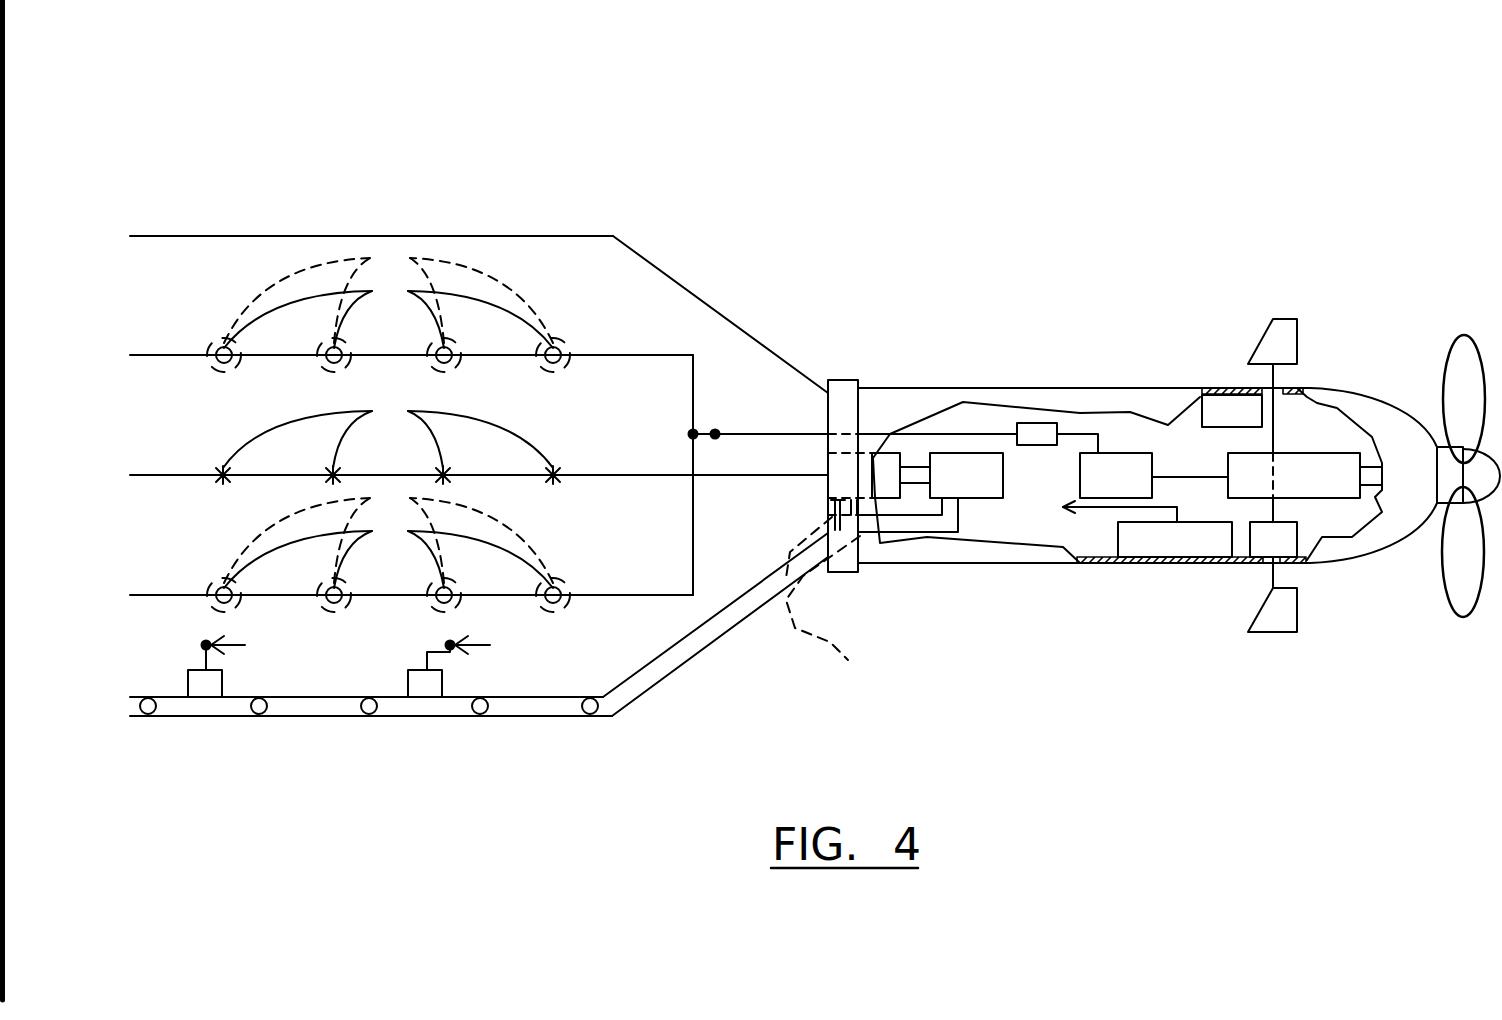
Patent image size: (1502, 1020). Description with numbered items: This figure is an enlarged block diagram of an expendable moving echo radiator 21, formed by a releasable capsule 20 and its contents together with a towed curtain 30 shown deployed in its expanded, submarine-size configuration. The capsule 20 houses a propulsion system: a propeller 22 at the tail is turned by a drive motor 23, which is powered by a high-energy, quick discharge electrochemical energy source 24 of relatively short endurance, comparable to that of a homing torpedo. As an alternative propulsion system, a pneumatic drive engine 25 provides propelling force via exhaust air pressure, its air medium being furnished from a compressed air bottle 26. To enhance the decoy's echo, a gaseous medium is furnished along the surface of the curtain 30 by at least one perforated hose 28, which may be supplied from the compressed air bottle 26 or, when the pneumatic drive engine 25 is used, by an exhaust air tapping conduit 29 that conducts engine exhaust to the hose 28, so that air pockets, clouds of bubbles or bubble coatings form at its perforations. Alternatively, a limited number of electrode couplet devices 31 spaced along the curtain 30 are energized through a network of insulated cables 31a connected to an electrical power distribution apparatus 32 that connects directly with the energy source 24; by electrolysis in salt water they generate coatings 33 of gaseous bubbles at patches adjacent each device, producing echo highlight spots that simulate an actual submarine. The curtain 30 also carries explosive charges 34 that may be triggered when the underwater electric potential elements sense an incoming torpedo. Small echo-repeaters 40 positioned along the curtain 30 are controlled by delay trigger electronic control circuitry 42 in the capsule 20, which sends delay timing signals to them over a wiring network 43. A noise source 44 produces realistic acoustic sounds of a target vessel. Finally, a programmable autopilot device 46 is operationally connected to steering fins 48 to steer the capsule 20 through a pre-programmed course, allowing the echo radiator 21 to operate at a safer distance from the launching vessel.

The capsule 20 is at (1112, 255).
The expendable moving echo radiator 21 is at (796, 250).
The propeller 22 is at (1460, 370).
The drive motor 23 is at (1315, 460).
The electrochemical energy source 24 is at (1112, 465).
The pneumatic drive engine 25 is at (828, 483).
The compressed air bottle 26 is at (978, 490).
The perforated hose 28 is at (682, 668).
The exhaust air tapping conduit 29 is at (826, 605).
The curtain 30 is at (694, 255).
The electrode couplet devices 31 is at (388, 441).
The insulated cables 31a is at (678, 355).
The electrical power distribution apparatus 32 is at (1037, 430).
The coatings of gaseous bubbles 33 is at (388, 429).
The explosive charges 34 is at (388, 441).
The echo-repeaters 40 is at (188, 683).
The delay trigger electronic control circuitry 42 is at (1178, 537).
The wiring network 43 is at (245, 645).
The noise source 44 is at (1242, 388).
The programmable autopilot device 46 is at (1297, 540).
The steering fins 48 is at (1290, 325).